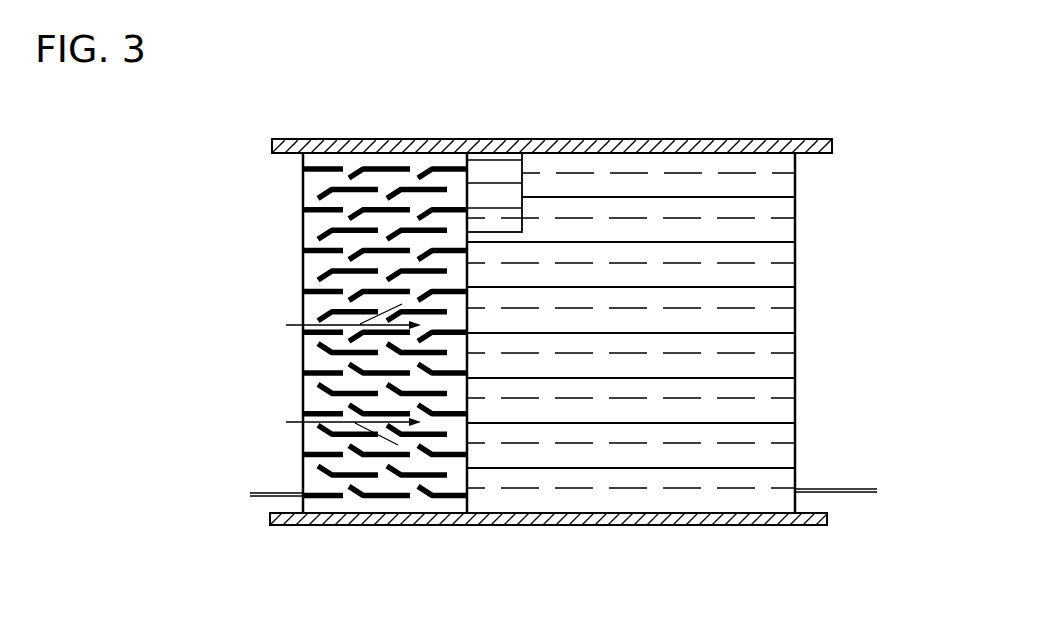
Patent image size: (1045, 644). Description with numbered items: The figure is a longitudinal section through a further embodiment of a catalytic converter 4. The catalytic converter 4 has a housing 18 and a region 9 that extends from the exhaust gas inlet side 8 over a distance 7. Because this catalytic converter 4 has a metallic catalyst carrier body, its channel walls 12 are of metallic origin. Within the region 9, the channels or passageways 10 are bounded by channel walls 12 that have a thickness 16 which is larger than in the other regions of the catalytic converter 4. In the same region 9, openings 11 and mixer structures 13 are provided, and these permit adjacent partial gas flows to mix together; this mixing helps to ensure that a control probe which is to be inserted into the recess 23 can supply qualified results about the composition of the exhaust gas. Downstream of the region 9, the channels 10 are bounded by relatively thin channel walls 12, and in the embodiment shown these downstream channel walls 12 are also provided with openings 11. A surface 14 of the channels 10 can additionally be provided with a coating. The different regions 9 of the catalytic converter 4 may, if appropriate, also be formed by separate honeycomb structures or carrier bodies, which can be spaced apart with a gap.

The catalytic converter 4 is at (195, 428).
The distance 7 is at (467, 90).
The exhaust gas inlet side 8 is at (327, 333).
The region 9 is at (388, 512).
The channels 10 is at (305, 360).
The openings 11 is at (778, 173).
The channel walls 12 is at (767, 378).
The mixer structures 13 is at (322, 196).
The surface 14 is at (787, 320).
The thickness 16 is at (250, 495).
The housing 18 is at (706, 140).
The recess 23 is at (496, 173).